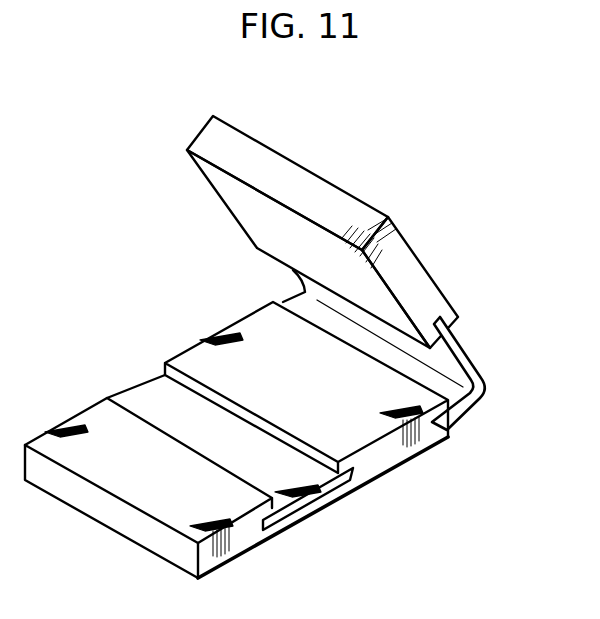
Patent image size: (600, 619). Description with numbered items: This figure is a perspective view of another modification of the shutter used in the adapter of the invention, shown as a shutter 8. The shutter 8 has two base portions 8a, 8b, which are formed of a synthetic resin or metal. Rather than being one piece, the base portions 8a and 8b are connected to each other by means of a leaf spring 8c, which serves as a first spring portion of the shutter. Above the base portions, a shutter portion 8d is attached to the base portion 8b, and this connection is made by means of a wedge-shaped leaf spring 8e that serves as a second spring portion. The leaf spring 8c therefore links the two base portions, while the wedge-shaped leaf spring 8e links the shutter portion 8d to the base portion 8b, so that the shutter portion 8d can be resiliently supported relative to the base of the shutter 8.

The shutter 8 is at (147, 263).
The base portion 8a is at (237, 542).
The base portion 8b is at (395, 447).
The leaf spring 8c is at (148, 400).
The shutter portion 8d is at (340, 202).
The wedge-shaped leaf spring 8e is at (470, 352).